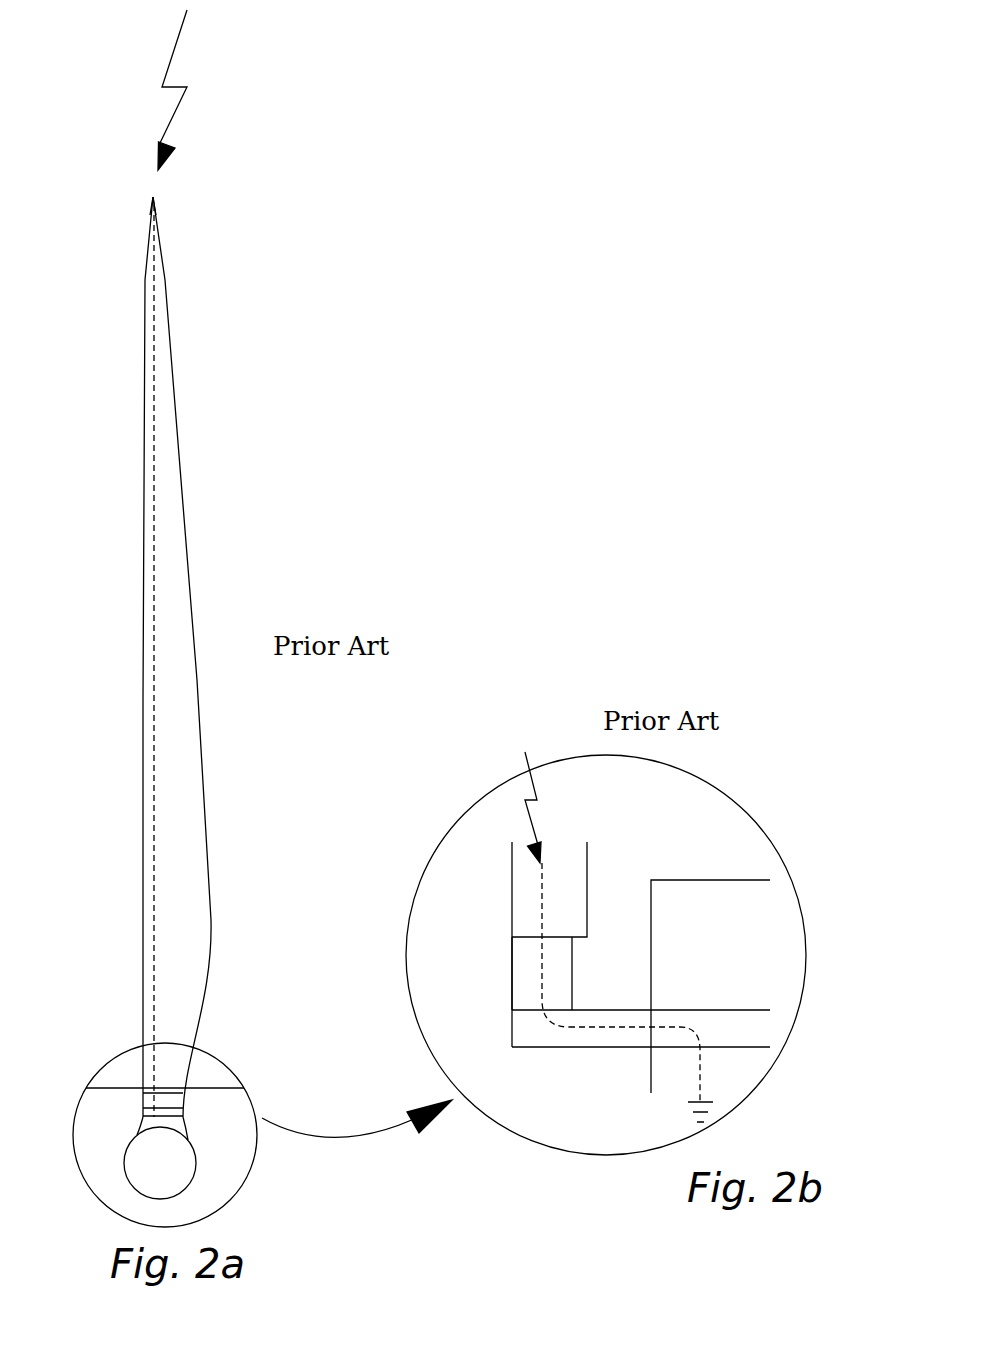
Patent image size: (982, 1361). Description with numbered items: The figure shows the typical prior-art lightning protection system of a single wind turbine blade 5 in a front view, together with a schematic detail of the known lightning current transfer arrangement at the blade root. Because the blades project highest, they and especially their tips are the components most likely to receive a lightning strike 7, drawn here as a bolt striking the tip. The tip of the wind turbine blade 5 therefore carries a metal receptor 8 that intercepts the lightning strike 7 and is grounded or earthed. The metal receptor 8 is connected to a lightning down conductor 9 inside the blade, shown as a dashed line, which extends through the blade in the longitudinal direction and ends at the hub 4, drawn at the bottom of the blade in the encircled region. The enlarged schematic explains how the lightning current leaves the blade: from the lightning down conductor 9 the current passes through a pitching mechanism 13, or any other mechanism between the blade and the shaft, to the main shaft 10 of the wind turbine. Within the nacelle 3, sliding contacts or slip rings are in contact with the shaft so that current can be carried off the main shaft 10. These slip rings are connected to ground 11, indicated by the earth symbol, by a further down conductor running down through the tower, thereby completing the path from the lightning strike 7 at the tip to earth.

In FIG. 2B, the nacelle 3 is at (730, 923).
In FIG. 2A, the hub 4 is at (187, 1187).
In FIG. 2A, the wind turbine blade 5 is at (202, 421).
In FIG. 2B, the wind turbine blade 5 is at (510, 863).
In FIG. 2A, the lightning strike 7 is at (179, 117).
In FIG. 2B, the lightning strike 7 is at (533, 775).
In FIG. 2A, the metal receptor 8 is at (155, 208).
In FIG. 2A, the lightning down conductor 9 is at (153, 540).
In FIG. 2B, the lightning down conductor 9 is at (542, 892).
In FIG. 2B, the main shaft 10 is at (600, 1027).
In FIG. 2B, the ground 11 is at (713, 1100).
In FIG. 2B, the pitching mechanism 13 is at (518, 985).